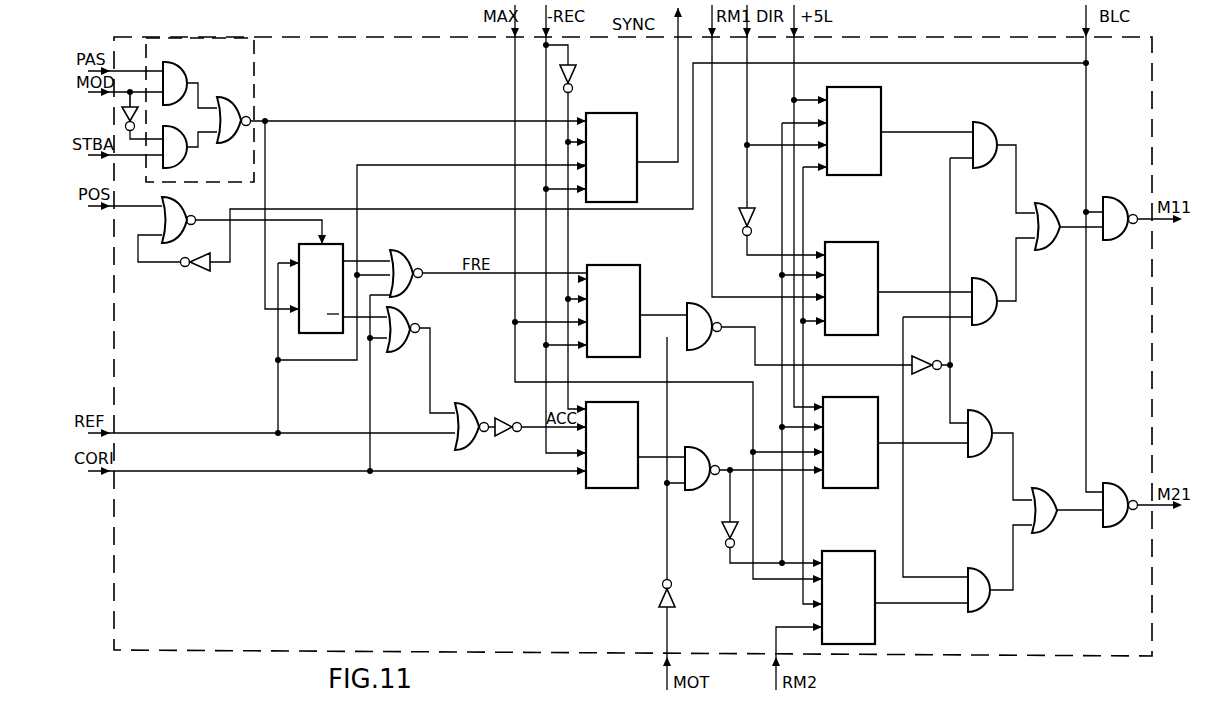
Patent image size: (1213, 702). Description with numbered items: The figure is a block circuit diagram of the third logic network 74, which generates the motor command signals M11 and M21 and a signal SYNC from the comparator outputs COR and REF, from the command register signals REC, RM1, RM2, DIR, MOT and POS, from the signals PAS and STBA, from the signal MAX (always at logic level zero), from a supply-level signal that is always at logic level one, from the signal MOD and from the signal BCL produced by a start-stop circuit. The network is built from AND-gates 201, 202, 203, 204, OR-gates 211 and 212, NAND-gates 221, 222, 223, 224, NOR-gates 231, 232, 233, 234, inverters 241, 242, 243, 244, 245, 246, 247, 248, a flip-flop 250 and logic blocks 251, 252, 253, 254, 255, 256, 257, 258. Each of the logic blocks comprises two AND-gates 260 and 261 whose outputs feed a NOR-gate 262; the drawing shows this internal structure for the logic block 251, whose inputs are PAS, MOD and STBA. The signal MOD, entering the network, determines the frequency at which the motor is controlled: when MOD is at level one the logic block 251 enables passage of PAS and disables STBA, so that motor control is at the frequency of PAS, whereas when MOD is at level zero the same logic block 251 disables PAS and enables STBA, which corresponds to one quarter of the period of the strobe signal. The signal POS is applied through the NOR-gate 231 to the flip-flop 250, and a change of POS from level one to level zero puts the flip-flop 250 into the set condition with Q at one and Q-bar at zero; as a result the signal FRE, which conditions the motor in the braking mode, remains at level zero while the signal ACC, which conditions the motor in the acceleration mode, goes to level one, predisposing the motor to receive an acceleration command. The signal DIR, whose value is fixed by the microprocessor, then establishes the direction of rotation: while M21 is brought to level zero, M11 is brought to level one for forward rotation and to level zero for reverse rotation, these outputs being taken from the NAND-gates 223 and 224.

The third logic network 74 is at (1130, 277).
The AND-gate 201 is at (990, 128).
The AND-gate 202 is at (985, 320).
The AND-gate 203 is at (986, 413).
The AND-gate 204 is at (980, 567).
The OR-gate 211 is at (1047, 250).
The OR-gate 212 is at (1052, 488).
The NAND-gate 221 is at (714, 312).
The NAND-gate 222 is at (692, 448).
The NAND-gate 223 is at (1115, 197).
The NAND-gate 224 is at (1111, 527).
The NOR-gate 231 is at (180, 206).
The NOR-gate 232 is at (404, 256).
The NOR-gate 233 is at (402, 350).
The NOR-gate 234 is at (470, 406).
The inverter 241 is at (140, 108).
The inverter 242 is at (200, 271).
The inverter 243 is at (500, 436).
The inverter 244 is at (578, 72).
The inverter 245 is at (740, 217).
The inverter 246 is at (720, 527).
The inverter 247 is at (674, 595).
The inverter 248 is at (921, 375).
The flip-flop 250 is at (301, 333).
The logic block 251 is at (246, 72).
The logic block 252 is at (617, 124).
The logic block 253 is at (617, 274).
The logic block 254 is at (618, 488).
The logic block 255 is at (880, 107).
The logic block 256 is at (870, 272).
The logic block 257 is at (848, 488).
The logic block 258 is at (863, 547).
The AND-gate 260 is at (178, 68).
The AND-gate 261 is at (177, 157).
The NOR-gate 262 is at (223, 143).